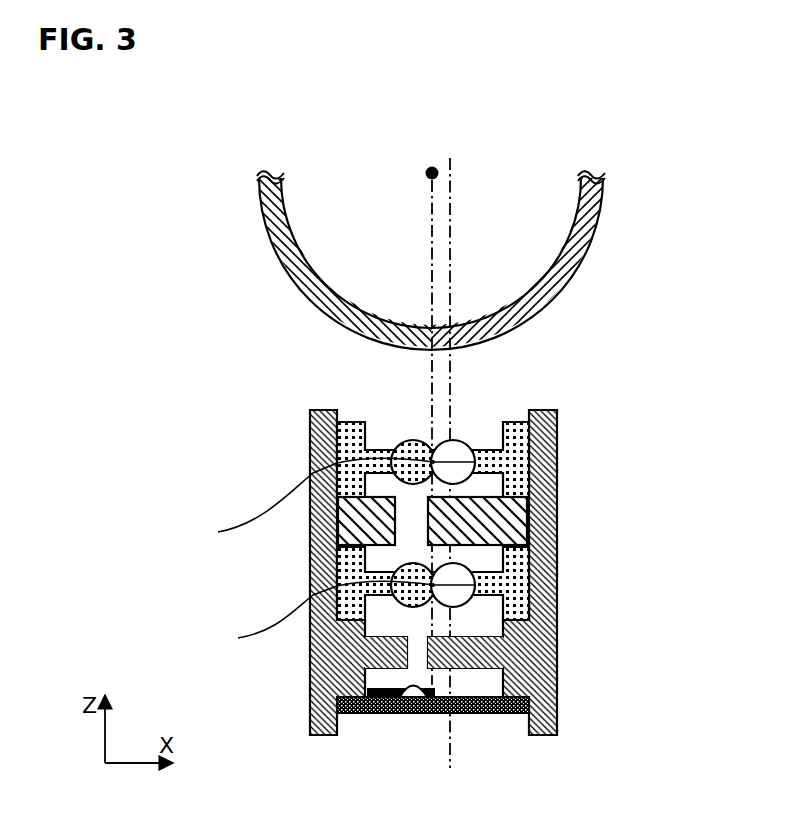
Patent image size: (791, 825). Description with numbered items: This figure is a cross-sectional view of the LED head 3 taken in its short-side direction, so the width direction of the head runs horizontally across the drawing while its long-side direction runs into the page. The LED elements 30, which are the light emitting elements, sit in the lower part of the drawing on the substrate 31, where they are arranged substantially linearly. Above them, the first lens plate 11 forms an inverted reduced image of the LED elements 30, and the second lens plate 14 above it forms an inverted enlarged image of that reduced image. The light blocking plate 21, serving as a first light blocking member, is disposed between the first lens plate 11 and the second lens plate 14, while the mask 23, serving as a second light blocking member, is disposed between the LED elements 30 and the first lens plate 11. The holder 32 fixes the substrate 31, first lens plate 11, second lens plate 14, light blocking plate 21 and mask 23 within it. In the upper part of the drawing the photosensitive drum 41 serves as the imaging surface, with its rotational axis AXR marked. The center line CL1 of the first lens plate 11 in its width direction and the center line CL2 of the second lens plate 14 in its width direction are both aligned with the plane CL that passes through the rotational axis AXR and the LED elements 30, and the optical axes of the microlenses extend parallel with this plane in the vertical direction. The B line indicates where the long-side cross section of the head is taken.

The LED head 3 is at (401, 573).
The first lens plate 11 is at (520, 578).
The second lens plate 14 is at (520, 438).
The light blocking plate 21 is at (528, 512).
The mask 23 is at (522, 650).
The LED elements 30 is at (433, 715).
The substrate 31 is at (366, 715).
The holder 32 is at (314, 452).
The photosensitive drum 41 is at (592, 241).
The rotational axis AXR is at (426, 166).
The B-B line B is at (452, 170).
The plane CL is at (432, 366).
The center line of first lens plate CL1 is at (314, 618).
The center line of second lens plate CL2 is at (303, 500).